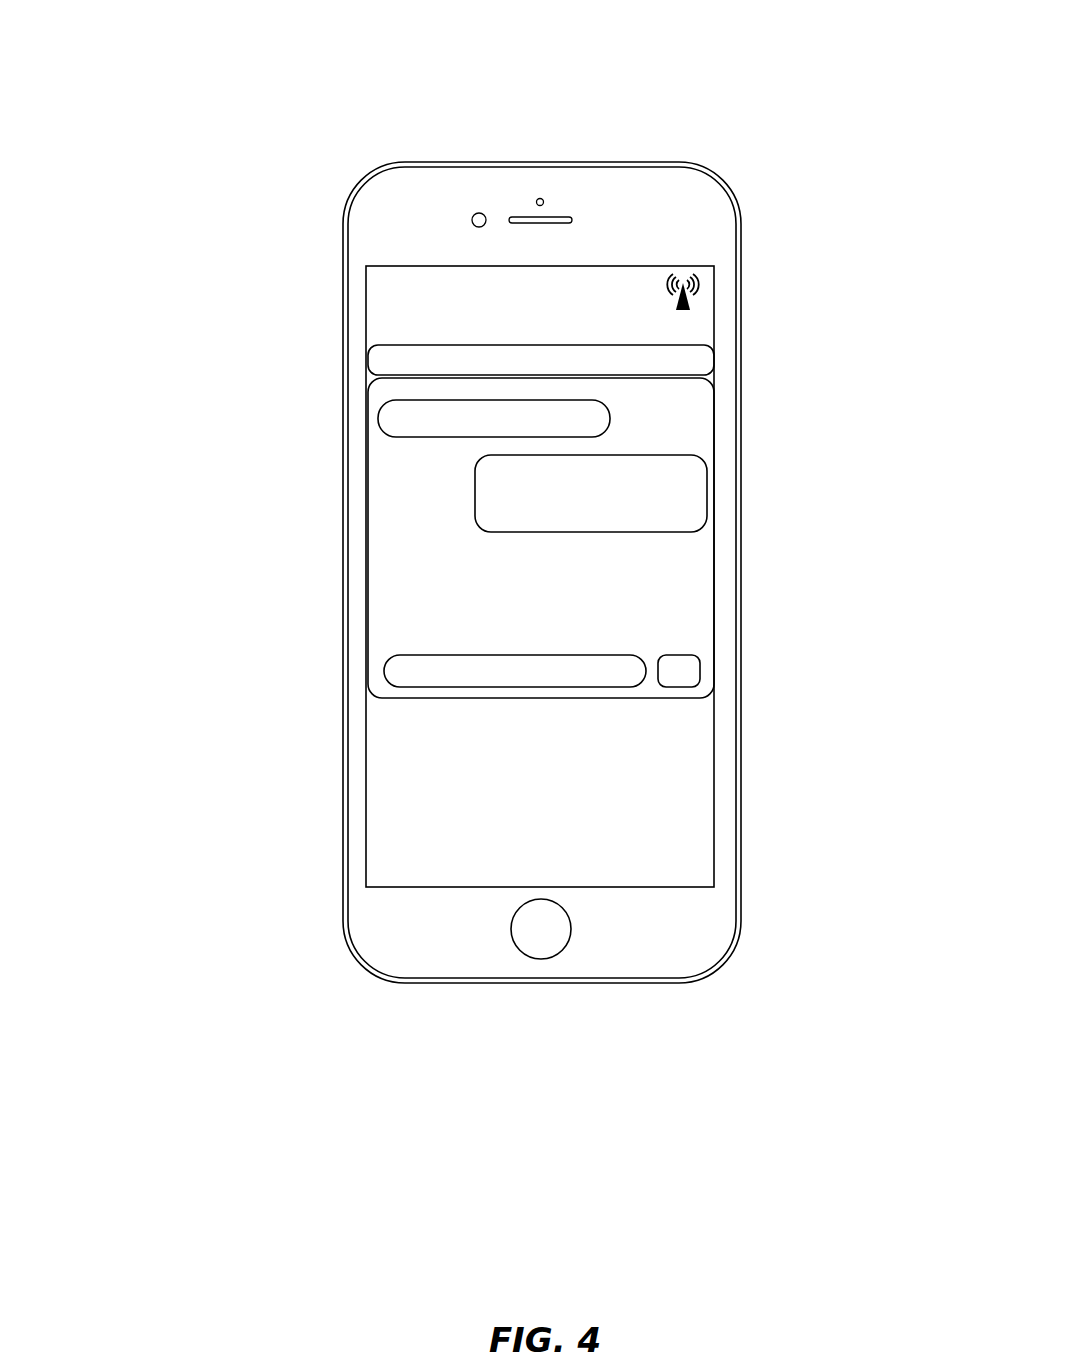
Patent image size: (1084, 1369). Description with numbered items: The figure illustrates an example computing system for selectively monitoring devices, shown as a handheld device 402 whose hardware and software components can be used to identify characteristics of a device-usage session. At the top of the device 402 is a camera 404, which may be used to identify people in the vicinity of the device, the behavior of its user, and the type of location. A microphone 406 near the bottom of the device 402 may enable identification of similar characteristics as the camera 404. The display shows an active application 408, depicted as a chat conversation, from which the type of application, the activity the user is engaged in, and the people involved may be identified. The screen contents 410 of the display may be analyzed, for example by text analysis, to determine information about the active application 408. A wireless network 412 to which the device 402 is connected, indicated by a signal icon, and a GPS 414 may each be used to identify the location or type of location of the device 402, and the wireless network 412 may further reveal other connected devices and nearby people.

The device 402 is at (178, 121).
The camera 404 is at (494, 196).
The microphone 406 is at (548, 1010).
The active application 408 is at (723, 522).
The screen contents 410 is at (404, 483).
The wireless network 412 is at (718, 298).
The GPS 414 is at (650, 212).